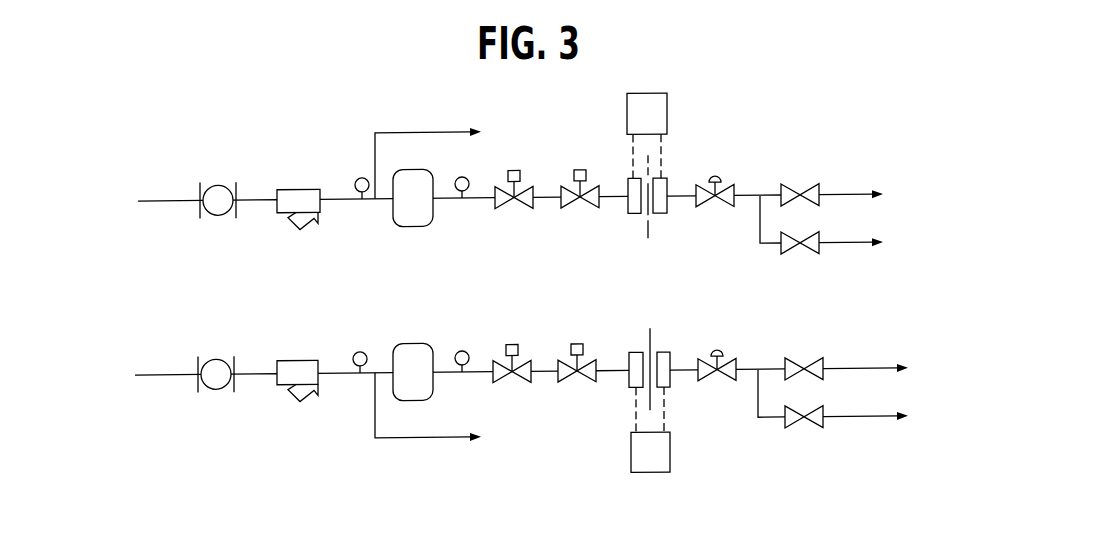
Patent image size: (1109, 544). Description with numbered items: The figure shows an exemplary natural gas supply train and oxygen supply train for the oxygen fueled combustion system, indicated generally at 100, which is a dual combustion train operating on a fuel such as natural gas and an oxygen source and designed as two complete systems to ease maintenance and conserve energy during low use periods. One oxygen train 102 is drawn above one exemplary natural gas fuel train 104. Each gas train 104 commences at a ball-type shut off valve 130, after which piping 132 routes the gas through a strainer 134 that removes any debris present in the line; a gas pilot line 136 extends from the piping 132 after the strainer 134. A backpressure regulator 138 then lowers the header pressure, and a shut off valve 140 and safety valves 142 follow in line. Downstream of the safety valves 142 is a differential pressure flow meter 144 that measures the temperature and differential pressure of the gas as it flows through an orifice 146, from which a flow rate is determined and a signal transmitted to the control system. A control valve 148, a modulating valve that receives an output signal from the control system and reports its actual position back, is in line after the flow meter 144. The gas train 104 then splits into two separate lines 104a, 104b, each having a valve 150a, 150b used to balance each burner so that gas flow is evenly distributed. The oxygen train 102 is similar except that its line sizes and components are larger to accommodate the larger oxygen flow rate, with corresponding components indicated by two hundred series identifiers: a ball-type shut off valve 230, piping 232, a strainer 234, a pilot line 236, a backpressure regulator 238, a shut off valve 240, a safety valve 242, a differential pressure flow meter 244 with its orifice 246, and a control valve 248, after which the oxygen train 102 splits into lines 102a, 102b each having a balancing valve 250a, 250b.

The combustion system 100 is at (929, 243).
The oxygen train 102 is at (122, 199).
The oxygen train line 102a is at (856, 200).
The oxygen train line 102b is at (863, 248).
The natural gas fuel train 104 is at (124, 392).
The gas train line 104a is at (894, 374).
The gas train line 104b is at (890, 425).
The ball-type shut off valve 130 is at (207, 391).
The piping 132 is at (253, 376).
The strainer 134 is at (303, 361).
The gas pilot line 136 is at (400, 440).
The backpressure regulator 138 is at (409, 346).
The shut off valve 140 is at (512, 377).
The safety valve 142 is at (577, 378).
The differential pressure flow meter 144 is at (655, 476).
The orifice 146 is at (650, 333).
The control valve 148 is at (723, 361).
The valve 150a is at (799, 367).
The valve 150b is at (797, 437).
The ball-type shut off valve 230 is at (207, 189).
The piping 232 is at (252, 199).
The strainer 234 is at (284, 216).
The pilot line 236 is at (400, 134).
The backpressure regulator 238 is at (390, 227).
The shut off valve 240 is at (514, 203).
The safety valve 242 is at (580, 204).
The differential pressure flow meter 244 is at (652, 97).
The orifice 246 is at (648, 242).
The control valve 248 is at (722, 185).
The valve 250a is at (798, 190).
The valve 250b is at (790, 259).